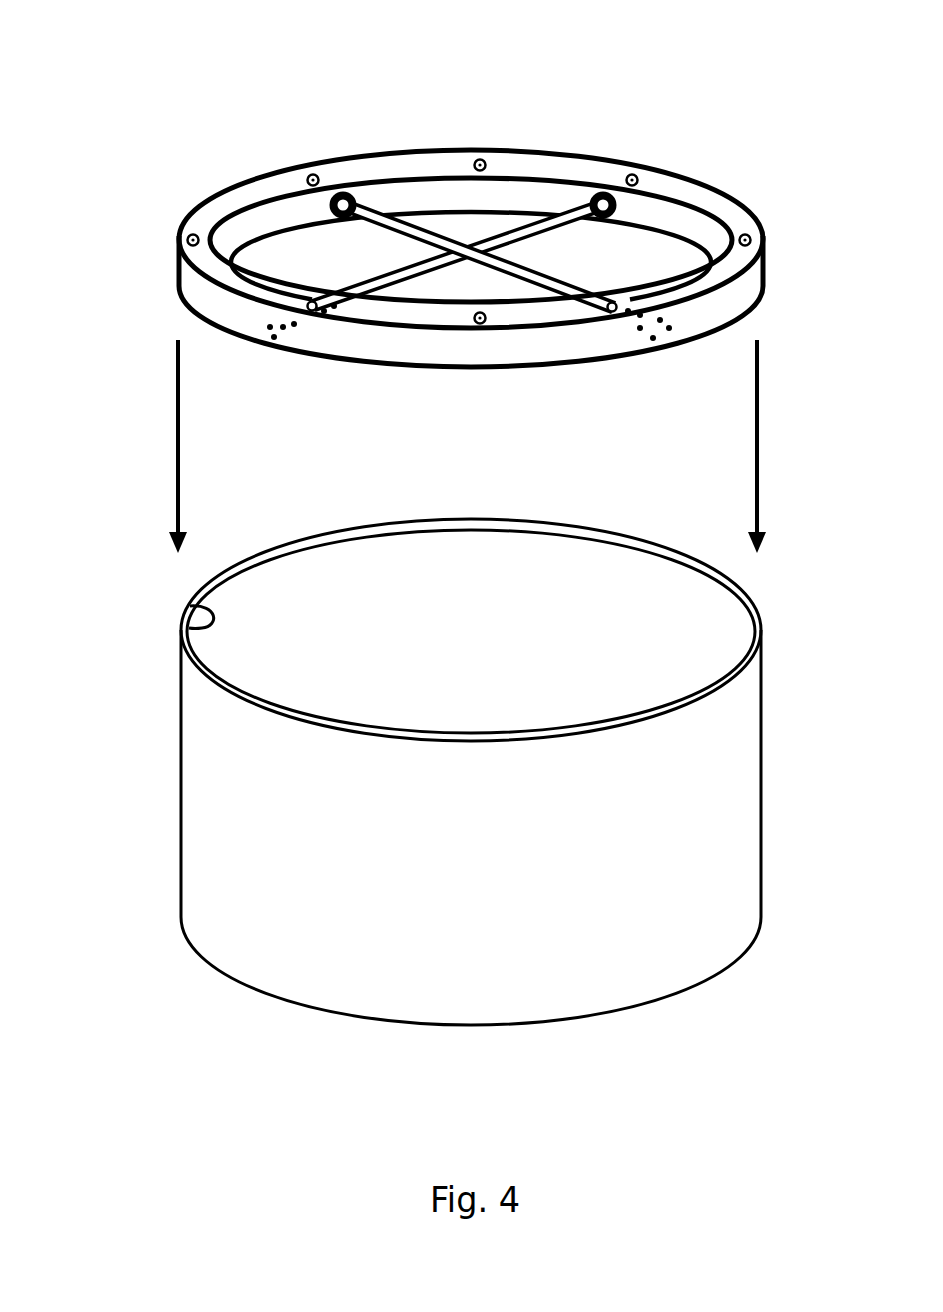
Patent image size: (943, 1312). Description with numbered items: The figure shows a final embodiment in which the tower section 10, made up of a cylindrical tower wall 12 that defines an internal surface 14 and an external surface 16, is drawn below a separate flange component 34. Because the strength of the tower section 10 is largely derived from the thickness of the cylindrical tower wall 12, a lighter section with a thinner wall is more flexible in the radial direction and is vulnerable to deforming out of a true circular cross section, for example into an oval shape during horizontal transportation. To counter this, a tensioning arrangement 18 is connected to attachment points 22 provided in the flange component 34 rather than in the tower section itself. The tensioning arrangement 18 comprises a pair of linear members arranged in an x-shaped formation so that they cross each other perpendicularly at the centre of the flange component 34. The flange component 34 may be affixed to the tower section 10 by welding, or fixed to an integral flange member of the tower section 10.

The tower section 10 is at (436, 530).
The cylindrical tower wall 12 is at (208, 760).
The internal surface 14 is at (191, 606).
The external surface 16 is at (181, 668).
The tensioning arrangement 18 is at (472, 201).
The attachment points 22 is at (342, 192).
The flange component 34 is at (703, 199).